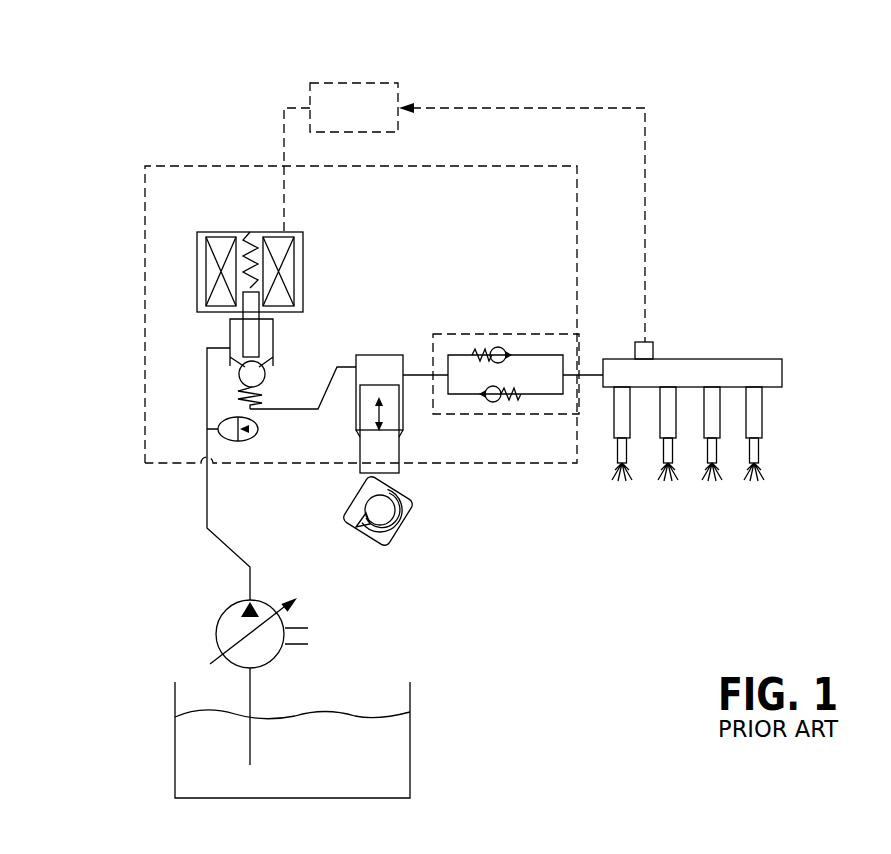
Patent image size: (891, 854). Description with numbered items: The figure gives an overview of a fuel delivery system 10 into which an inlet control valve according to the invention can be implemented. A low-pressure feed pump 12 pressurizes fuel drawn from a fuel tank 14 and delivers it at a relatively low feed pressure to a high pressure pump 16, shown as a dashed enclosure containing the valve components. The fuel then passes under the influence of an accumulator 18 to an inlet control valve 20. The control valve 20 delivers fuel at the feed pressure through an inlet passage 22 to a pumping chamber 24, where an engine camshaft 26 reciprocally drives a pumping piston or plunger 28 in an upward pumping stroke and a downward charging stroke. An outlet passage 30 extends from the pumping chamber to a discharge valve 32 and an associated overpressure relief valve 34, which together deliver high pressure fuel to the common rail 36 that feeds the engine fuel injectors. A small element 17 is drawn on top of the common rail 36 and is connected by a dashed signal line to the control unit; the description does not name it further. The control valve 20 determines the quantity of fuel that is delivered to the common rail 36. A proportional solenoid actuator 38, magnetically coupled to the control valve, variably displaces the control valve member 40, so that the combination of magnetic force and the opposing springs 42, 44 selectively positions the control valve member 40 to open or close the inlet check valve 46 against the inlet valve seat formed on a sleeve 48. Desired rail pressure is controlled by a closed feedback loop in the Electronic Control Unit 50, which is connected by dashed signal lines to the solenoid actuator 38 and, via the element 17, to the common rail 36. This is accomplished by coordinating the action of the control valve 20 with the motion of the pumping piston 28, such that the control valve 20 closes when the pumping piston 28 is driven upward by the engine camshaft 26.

The fuel delivery system 10 is at (720, 158).
The low-pressure feed pump 12 is at (220, 616).
The fuel tank 14 is at (590, 372).
The high pressure pump 16 is at (228, 165).
The rail pressure sensor 17 is at (653, 342).
The accumulator 18 is at (236, 441).
The inlet control valve 20 is at (218, 335).
The inlet passage 22 is at (278, 411).
The pumping chamber 24 is at (378, 362).
The engine camshaft 26 is at (412, 508).
The pumping piston 28 is at (399, 443).
The outlet passage 30 is at (415, 370).
The discharge valve 32 is at (500, 400).
The overpressure relief valve 34 is at (494, 346).
The common rail 36 is at (722, 359).
The proportional solenoid actuator 38 is at (218, 297).
The control valve member 40 is at (250, 333).
The spring 42 is at (250, 238).
The spring 44 is at (248, 397).
The inlet check valve 46 is at (241, 375).
The sleeve 48 is at (273, 355).
The Electronic Control Unit (ECU) 50 is at (398, 83).